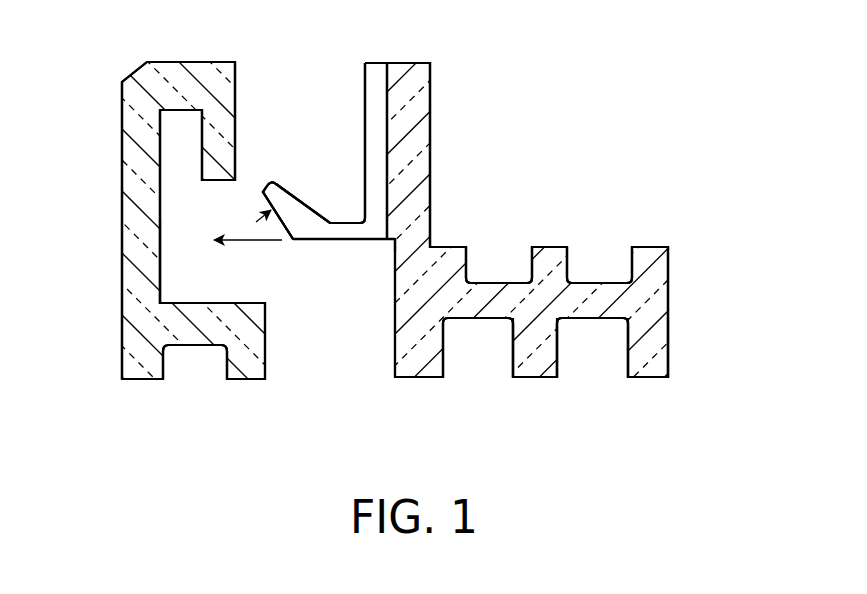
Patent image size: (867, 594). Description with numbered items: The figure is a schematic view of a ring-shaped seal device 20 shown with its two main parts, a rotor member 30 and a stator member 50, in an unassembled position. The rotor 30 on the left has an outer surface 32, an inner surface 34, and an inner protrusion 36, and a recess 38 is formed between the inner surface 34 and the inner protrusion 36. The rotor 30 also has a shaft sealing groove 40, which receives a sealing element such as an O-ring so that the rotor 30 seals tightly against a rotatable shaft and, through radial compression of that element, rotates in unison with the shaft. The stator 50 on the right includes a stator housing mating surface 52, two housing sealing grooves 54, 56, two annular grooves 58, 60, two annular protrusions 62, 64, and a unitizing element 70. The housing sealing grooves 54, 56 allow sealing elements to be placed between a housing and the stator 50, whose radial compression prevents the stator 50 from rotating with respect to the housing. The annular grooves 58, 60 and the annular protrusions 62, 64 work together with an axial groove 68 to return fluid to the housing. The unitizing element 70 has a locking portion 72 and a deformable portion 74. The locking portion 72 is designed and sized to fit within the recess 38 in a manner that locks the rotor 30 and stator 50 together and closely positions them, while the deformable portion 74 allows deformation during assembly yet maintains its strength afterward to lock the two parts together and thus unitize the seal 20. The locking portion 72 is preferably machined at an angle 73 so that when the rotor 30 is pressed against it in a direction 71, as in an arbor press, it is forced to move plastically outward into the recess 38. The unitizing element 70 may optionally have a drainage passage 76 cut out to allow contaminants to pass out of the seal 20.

The seal device 20 is at (657, 53).
The rotor member 30 is at (157, 85).
The outer surface 32 is at (123, 112).
The inner surface 34 is at (168, 220).
The inner protrusion 36 is at (213, 144).
The recess 38 is at (182, 138).
The shaft sealing groove 40 is at (188, 353).
The stator member 50 is at (404, 75).
The stator housing mating surface 52 is at (433, 138).
The housing sealing groove 54 is at (497, 270).
The housing sealing groove 56 is at (598, 268).
The annular groove 58 is at (472, 338).
The annular groove 60 is at (592, 338).
The annular protrusion 62 is at (538, 355).
The annular protrusion 64 is at (652, 355).
The axial groove 68 is at (653, 346).
The unitizing element 70 is at (310, 248).
The direction 71 is at (253, 240).
The locking portion 72 is at (305, 207).
The angle 73 is at (256, 222).
The deformable portion 74 is at (358, 232).
The drainage passage 76 is at (372, 83).